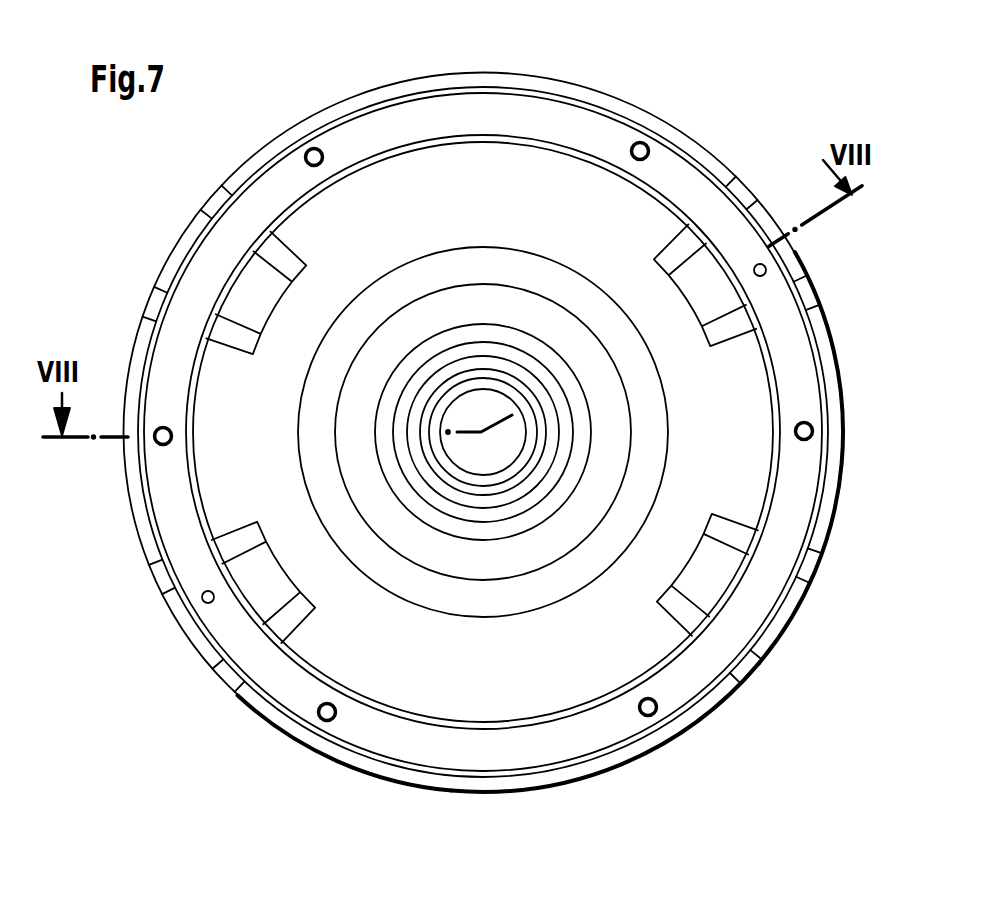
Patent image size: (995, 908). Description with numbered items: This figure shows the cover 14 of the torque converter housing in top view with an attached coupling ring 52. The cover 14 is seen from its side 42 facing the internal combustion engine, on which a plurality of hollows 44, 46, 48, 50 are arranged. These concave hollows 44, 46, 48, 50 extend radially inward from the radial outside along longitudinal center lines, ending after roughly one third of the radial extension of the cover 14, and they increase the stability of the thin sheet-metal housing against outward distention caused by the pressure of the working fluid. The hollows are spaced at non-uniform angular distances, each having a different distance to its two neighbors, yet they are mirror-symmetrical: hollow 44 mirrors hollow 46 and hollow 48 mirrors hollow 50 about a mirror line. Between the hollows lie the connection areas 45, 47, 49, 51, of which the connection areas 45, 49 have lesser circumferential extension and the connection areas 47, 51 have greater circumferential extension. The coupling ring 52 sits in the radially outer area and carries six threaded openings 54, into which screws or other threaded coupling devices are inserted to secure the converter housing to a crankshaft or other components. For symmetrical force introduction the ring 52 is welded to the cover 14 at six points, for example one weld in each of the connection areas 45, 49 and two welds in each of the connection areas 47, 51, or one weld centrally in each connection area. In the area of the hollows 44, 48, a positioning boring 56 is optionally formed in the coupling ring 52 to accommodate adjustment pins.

The cover 14 is at (426, 789).
The side of the cover facing the internal combustion engine 42 is at (555, 707).
The hollow 44 is at (205, 653).
The connection area 45 is at (142, 536).
The hollow 46 is at (192, 218).
The connection area 47 is at (437, 75).
The hollow 48 is at (792, 258).
The connection area 49 is at (823, 470).
The hollow 50 is at (787, 627).
The connection area 51 is at (647, 753).
The coupling ring 52 is at (535, 103).
The threaded openings 54 is at (314, 147).
The positioning boring 56 is at (767, 273).